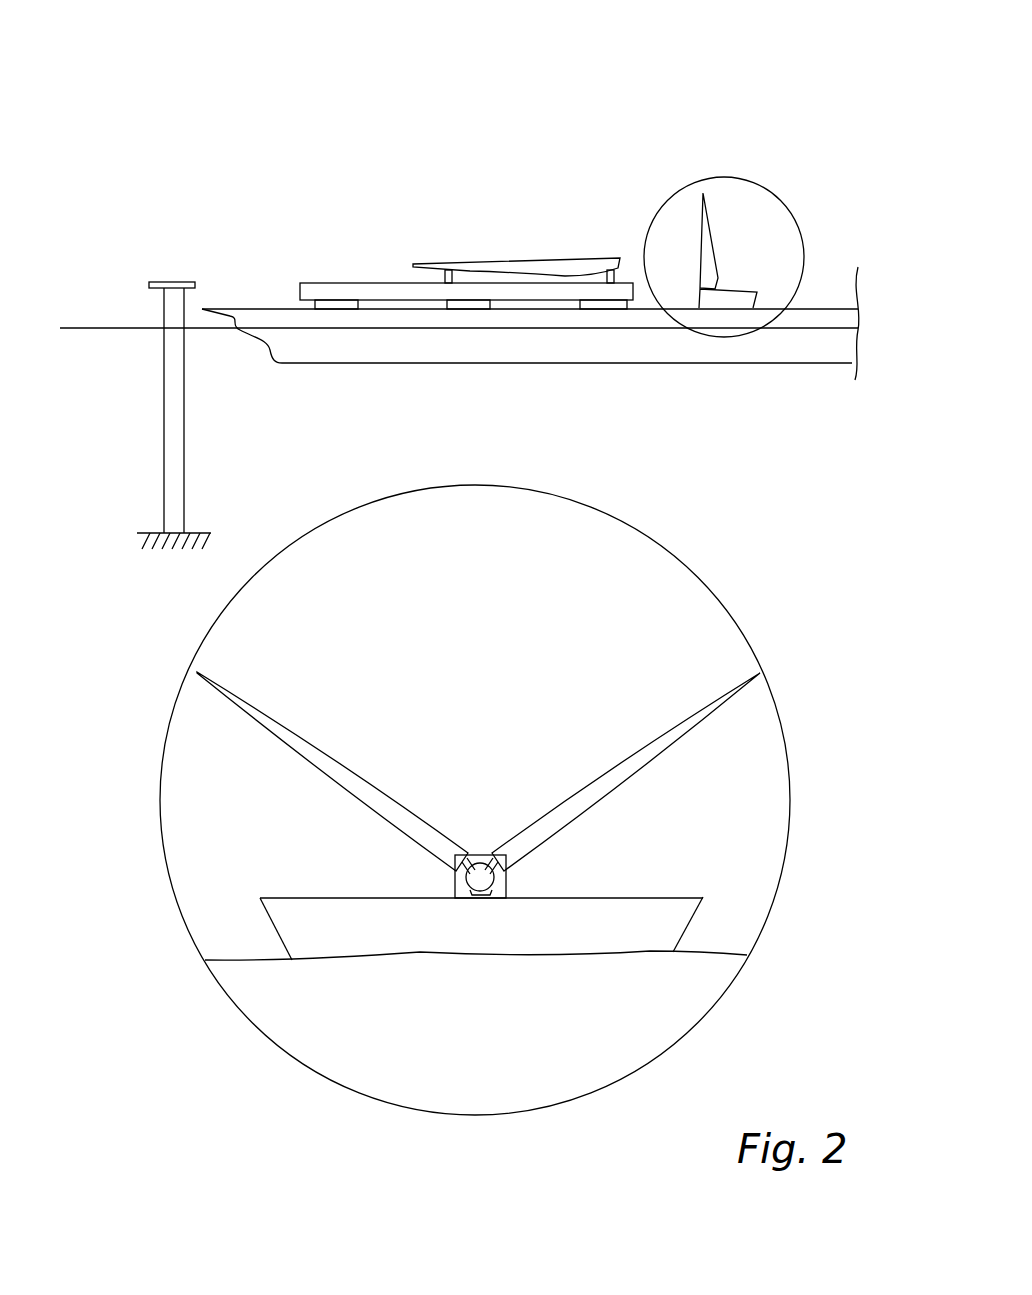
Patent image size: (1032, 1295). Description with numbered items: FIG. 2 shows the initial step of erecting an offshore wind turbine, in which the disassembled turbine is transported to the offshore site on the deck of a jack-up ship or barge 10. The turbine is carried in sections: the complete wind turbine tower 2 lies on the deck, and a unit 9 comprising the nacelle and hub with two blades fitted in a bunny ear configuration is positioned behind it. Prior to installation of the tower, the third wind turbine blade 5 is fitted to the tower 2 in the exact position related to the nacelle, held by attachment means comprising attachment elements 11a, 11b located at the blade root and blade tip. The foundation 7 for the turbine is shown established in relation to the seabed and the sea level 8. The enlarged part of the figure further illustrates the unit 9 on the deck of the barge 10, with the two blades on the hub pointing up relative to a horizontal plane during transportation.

The wind turbine tower 2 is at (315, 285).
The wind turbine blade 5 is at (565, 258).
The foundation 7 is at (180, 435).
The sea level 8 is at (83, 327).
The unit 9 is at (758, 170).
The jack-up ship or barge 10 is at (610, 357).
The attachment element 11a is at (613, 277).
The attachment element 11b is at (453, 277).